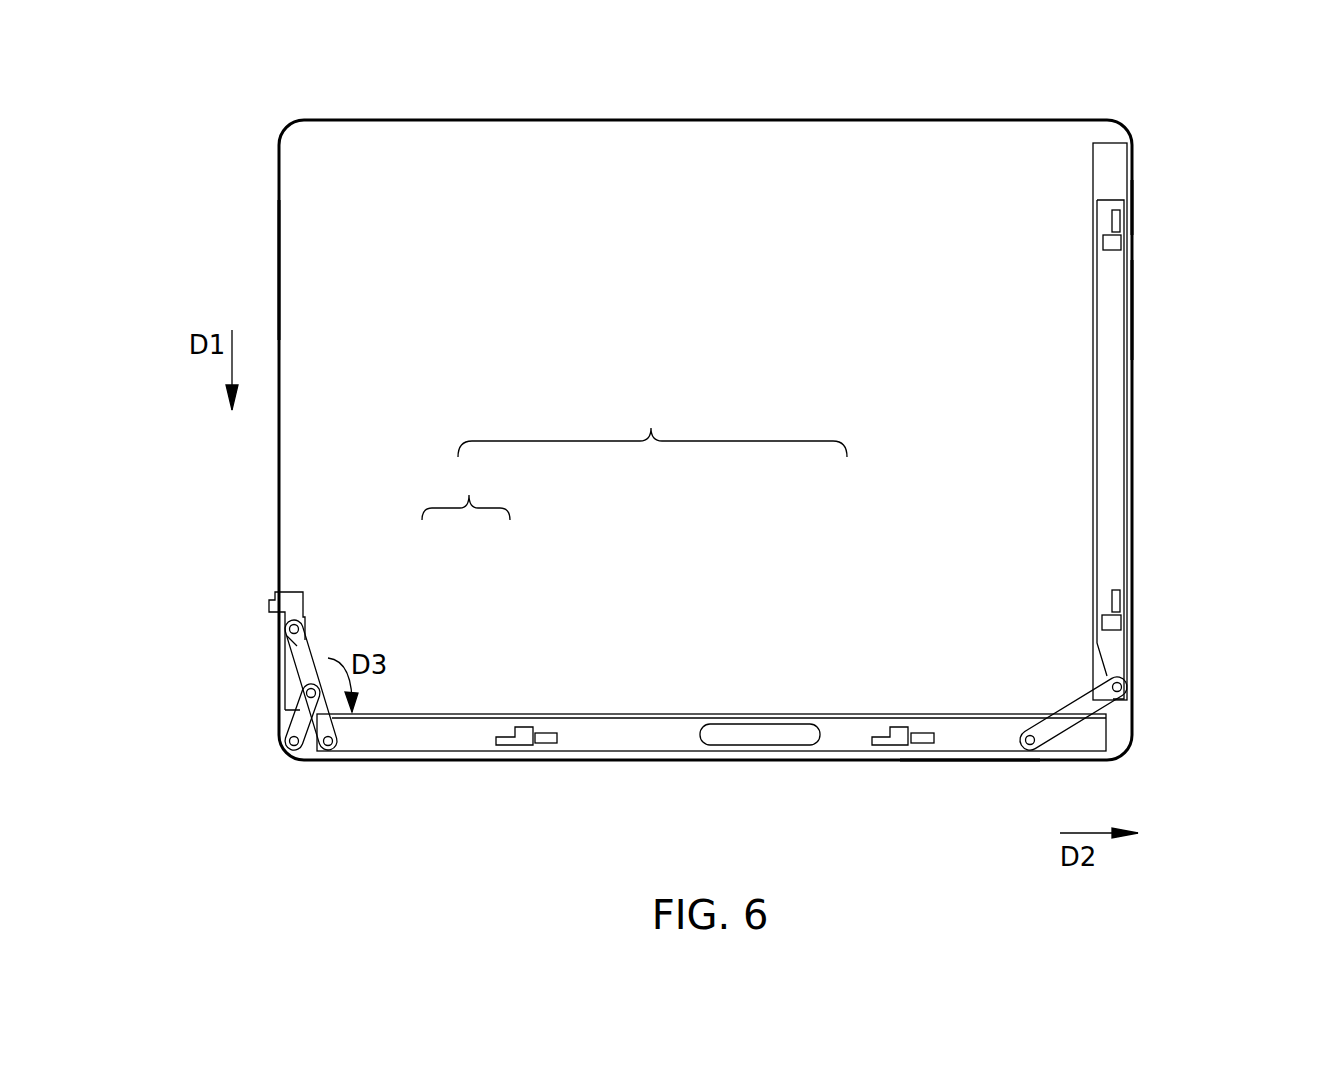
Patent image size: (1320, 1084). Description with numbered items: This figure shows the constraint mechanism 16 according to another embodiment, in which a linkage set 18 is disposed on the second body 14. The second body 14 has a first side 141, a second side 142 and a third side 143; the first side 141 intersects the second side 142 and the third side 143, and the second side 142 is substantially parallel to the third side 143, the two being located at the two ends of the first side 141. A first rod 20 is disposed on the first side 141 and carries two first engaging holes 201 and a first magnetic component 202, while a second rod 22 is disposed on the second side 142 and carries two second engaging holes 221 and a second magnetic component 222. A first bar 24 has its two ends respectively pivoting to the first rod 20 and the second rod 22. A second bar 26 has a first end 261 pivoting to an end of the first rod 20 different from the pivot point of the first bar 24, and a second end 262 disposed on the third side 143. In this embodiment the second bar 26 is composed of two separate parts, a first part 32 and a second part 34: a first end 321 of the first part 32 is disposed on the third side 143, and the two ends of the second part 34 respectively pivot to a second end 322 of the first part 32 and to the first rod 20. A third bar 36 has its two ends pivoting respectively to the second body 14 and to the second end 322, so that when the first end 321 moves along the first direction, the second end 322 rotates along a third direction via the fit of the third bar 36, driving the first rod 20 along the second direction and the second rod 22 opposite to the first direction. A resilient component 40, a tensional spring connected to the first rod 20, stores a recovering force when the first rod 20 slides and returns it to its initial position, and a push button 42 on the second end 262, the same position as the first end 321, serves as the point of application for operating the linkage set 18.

The second body 14 is at (835, 142).
The first side 141 is at (970, 773).
The second side 142 is at (1153, 311).
The third side 143 is at (258, 272).
The constraint mechanism 16 is at (1130, 203).
The linkage set 18 is at (651, 428).
The first rod 20 is at (604, 733).
The first engaging hole 201 is at (523, 740).
The first magnetic component 202 is at (548, 737).
The second rod 22 is at (1107, 483).
The second engaging hole 221 is at (1122, 243).
The second magnetic component 222 is at (1112, 218).
The first bar 24 is at (1068, 714).
The second bar 26 is at (469, 495).
The first end 261 is at (328, 748).
The second end 262 is at (290, 629).
The first part 32 is at (305, 658).
The first end 321 is at (290, 640).
The second end 322 is at (305, 693).
The second part 34 is at (327, 727).
The third bar 36 is at (293, 730).
The resilient component 40 is at (757, 728).
The push button 42 is at (292, 602).